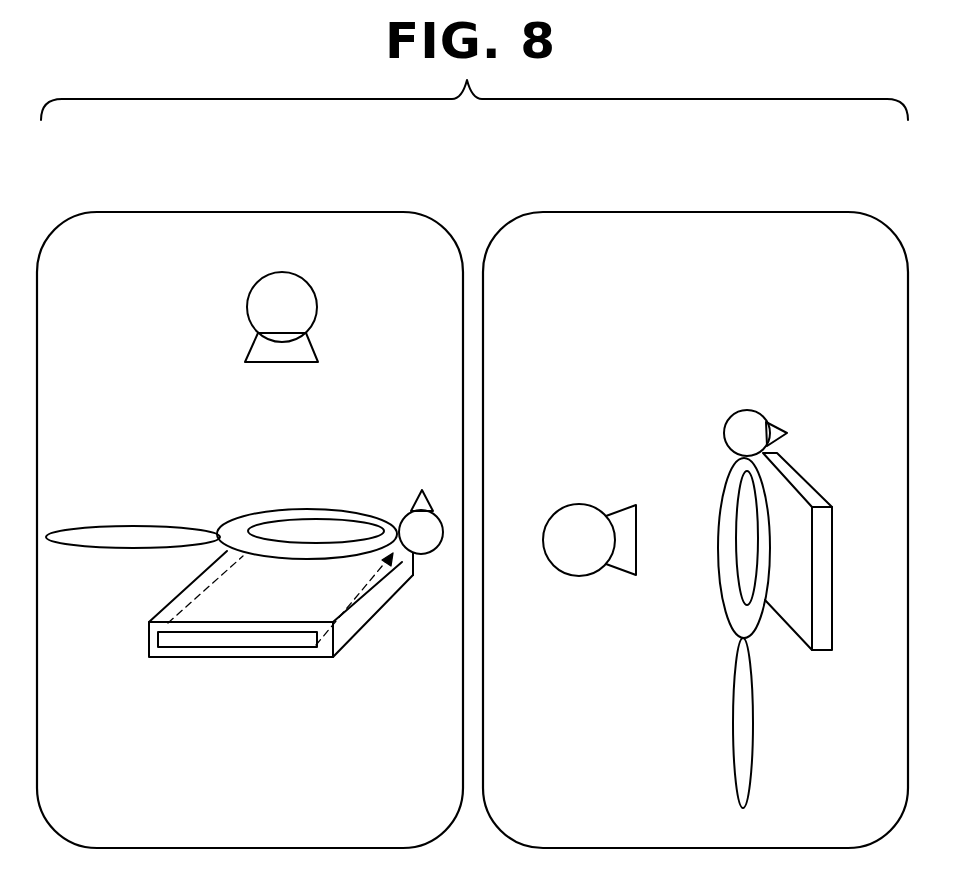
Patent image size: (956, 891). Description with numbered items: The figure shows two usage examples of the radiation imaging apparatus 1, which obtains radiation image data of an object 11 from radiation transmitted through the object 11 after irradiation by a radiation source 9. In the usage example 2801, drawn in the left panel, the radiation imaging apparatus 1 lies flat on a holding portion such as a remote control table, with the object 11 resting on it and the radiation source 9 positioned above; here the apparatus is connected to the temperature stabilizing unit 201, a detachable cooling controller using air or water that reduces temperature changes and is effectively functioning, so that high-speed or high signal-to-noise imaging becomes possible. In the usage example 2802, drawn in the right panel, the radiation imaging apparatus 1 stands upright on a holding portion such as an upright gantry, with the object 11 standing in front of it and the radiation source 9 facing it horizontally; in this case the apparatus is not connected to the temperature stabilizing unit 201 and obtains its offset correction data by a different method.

The usage example 2801 is at (272, 212).
The usage example 2802 is at (692, 212).
The radiation source 9 is at (250, 292).
The object 11 is at (262, 510).
The radiation imaging apparatus 1 is at (333, 585).
The temperature stabilizing unit 201 is at (343, 630).